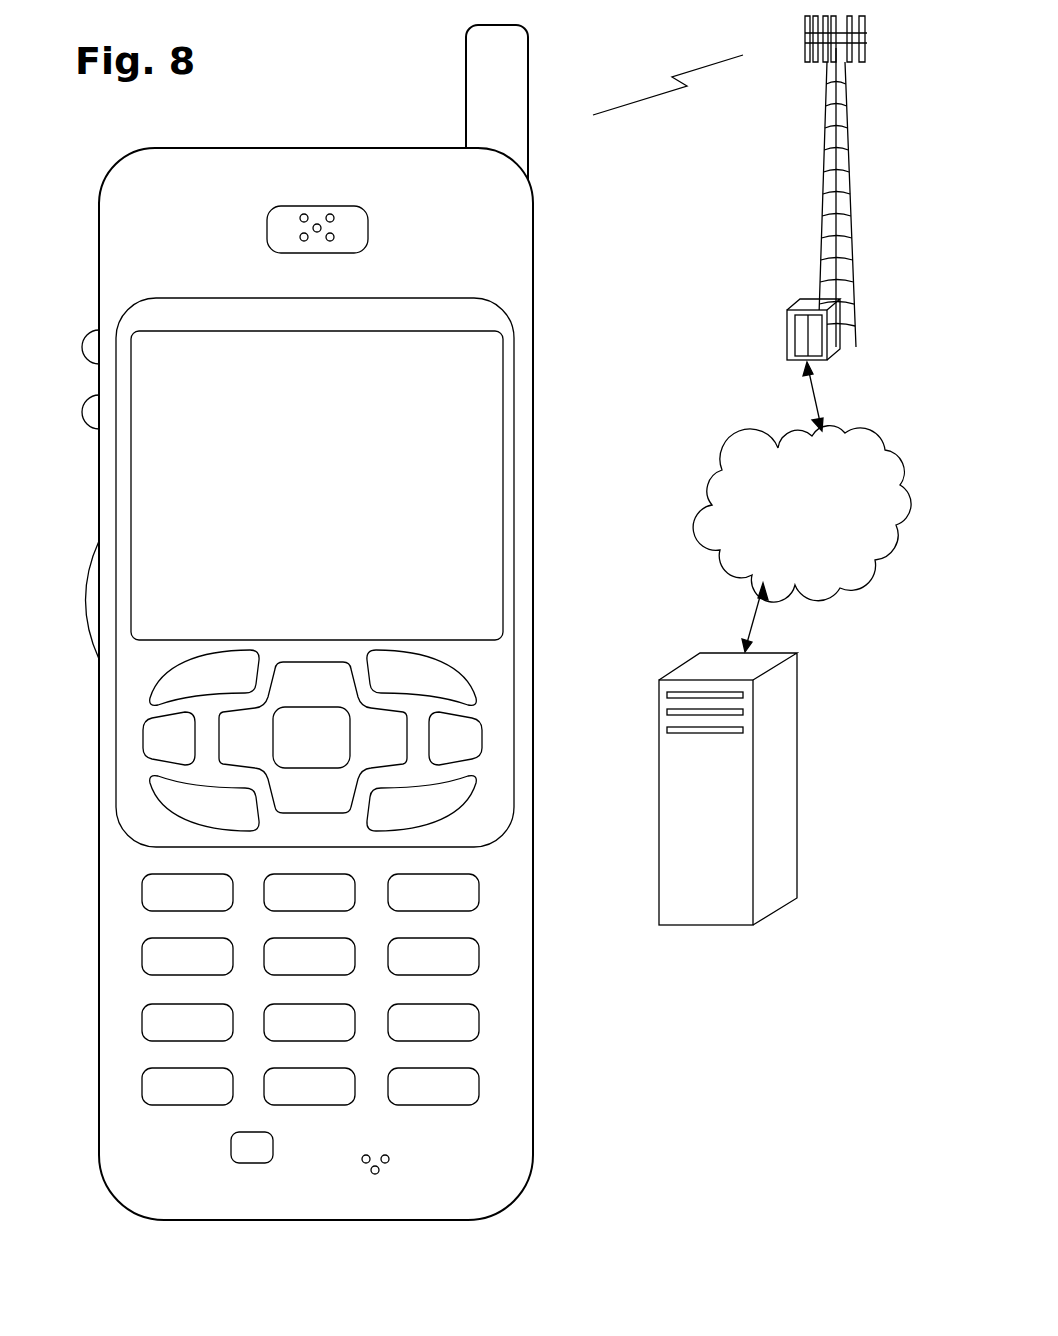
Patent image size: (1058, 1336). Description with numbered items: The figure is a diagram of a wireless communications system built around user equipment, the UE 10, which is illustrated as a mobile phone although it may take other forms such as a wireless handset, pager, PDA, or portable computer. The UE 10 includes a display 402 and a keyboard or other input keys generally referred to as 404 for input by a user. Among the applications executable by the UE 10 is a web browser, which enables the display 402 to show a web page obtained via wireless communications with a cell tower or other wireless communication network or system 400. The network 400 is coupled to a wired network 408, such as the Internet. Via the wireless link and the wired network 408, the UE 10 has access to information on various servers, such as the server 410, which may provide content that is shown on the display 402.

The UE 10 is at (345, 637).
The display 402 is at (514, 345).
The input keys 404 is at (540, 654).
The wireless communication network 400 is at (822, 203).
The wired network 408 is at (733, 557).
The server 410 is at (708, 927).